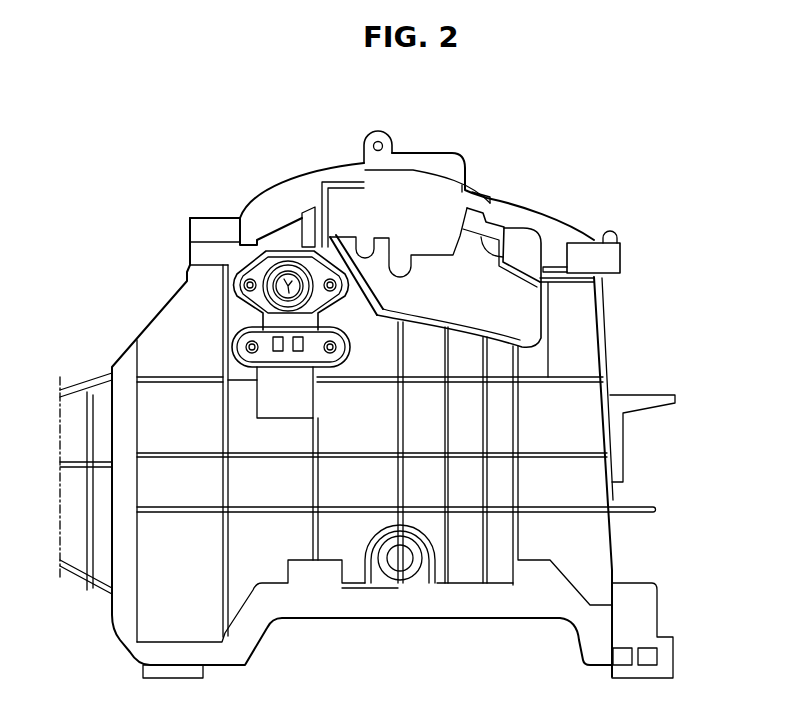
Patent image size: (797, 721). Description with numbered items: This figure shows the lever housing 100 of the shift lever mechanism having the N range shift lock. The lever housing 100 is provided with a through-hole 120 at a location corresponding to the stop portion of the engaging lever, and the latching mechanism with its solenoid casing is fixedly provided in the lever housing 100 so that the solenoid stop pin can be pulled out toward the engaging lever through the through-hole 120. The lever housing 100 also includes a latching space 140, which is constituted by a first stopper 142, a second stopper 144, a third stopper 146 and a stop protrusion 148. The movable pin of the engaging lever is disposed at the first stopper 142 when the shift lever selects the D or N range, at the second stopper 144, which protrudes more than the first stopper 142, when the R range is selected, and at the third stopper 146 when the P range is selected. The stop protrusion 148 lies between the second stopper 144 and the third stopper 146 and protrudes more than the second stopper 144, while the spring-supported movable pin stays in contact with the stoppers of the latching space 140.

The lever housing 100 is at (557, 425).
The through-hole 120 is at (285, 281).
The latching space 140 is at (490, 297).
The first stopper 142 is at (510, 256).
The second stopper 144 is at (442, 260).
The third stopper 146 is at (350, 248).
The stop protrusion 148 is at (396, 277).